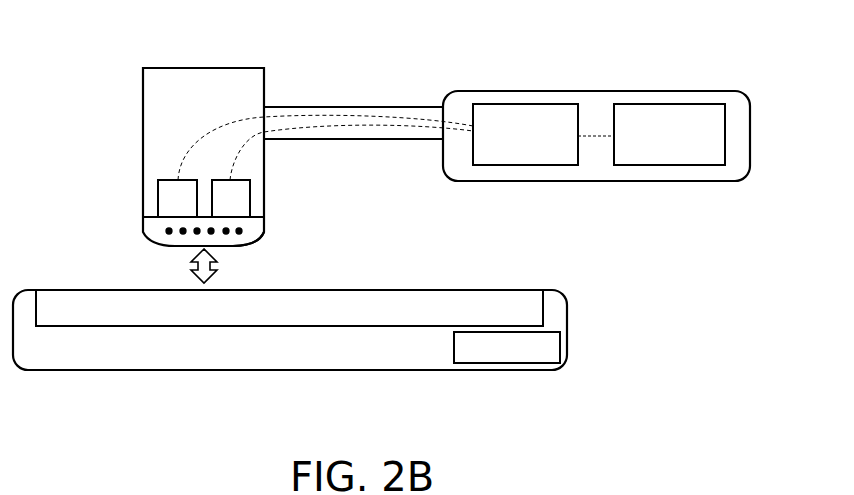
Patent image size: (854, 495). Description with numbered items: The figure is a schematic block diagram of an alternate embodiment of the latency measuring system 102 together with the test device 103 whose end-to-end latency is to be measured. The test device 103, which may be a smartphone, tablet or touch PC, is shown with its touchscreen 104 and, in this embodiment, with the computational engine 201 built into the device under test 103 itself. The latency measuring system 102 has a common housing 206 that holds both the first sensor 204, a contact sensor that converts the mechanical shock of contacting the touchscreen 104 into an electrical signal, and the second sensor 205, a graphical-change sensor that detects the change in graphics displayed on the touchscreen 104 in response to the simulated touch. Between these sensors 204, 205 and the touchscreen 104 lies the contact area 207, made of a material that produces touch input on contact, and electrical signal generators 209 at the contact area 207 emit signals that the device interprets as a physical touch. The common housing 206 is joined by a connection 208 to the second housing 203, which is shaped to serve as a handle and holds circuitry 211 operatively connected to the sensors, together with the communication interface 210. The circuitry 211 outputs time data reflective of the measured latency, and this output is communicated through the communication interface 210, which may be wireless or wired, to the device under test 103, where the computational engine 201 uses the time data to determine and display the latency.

The latency measuring system 102 is at (482, 57).
The test device 103 is at (245, 370).
The touchscreen 104 is at (455, 290).
The computational engine 201 is at (478, 363).
The second housing 203 is at (600, 181).
The first sensor 204 is at (250, 198).
The second sensor 205 is at (158, 195).
The common housing 206 is at (143, 135).
The contact area 207 is at (240, 244).
The connection 208 is at (385, 109).
The electrical signal generators 209 is at (184, 243).
The communication interface 210 is at (683, 104).
The circuitry 211 is at (540, 104).